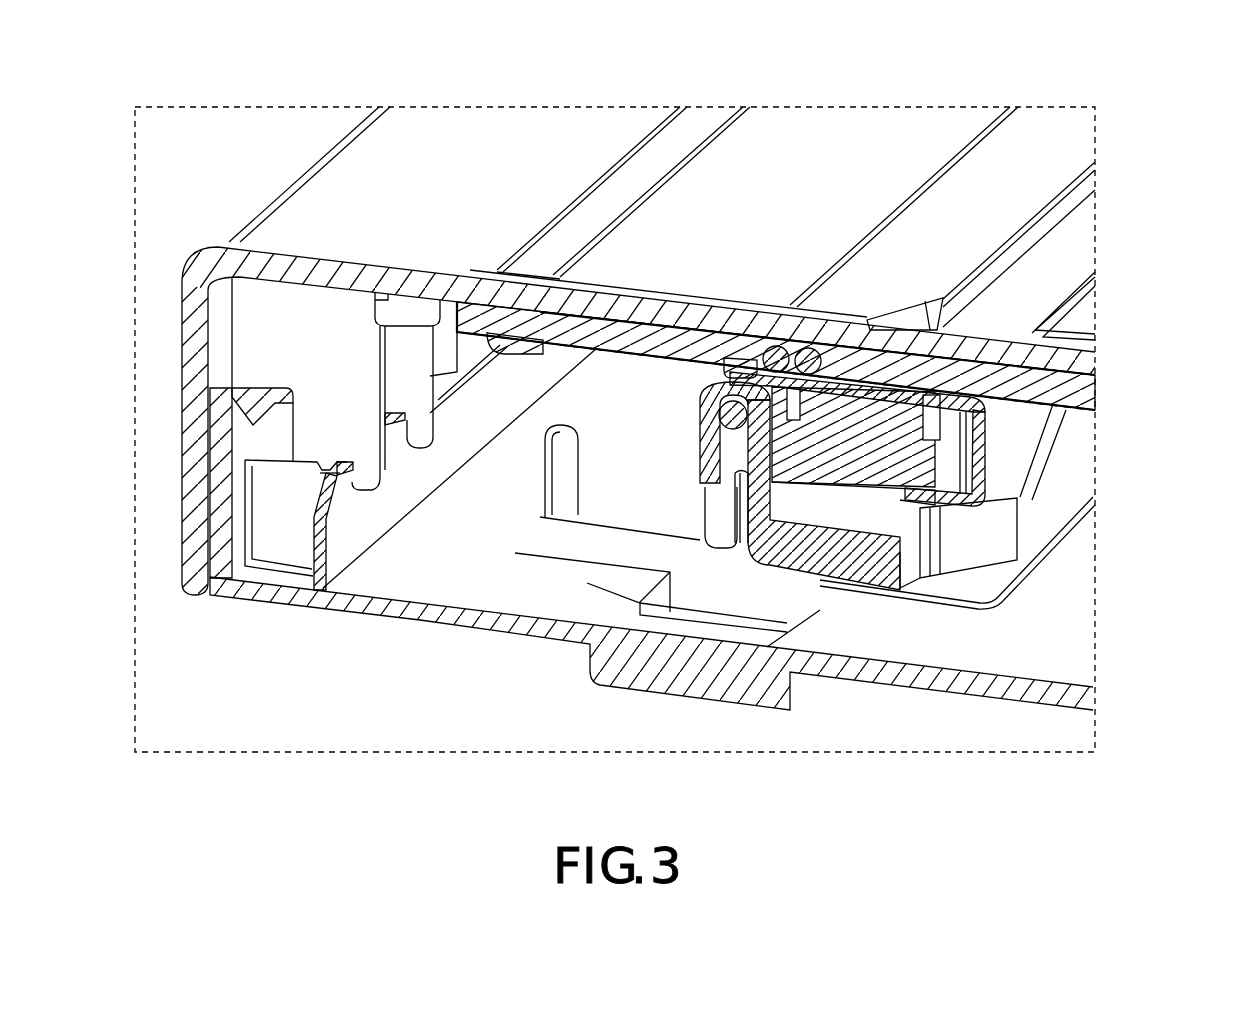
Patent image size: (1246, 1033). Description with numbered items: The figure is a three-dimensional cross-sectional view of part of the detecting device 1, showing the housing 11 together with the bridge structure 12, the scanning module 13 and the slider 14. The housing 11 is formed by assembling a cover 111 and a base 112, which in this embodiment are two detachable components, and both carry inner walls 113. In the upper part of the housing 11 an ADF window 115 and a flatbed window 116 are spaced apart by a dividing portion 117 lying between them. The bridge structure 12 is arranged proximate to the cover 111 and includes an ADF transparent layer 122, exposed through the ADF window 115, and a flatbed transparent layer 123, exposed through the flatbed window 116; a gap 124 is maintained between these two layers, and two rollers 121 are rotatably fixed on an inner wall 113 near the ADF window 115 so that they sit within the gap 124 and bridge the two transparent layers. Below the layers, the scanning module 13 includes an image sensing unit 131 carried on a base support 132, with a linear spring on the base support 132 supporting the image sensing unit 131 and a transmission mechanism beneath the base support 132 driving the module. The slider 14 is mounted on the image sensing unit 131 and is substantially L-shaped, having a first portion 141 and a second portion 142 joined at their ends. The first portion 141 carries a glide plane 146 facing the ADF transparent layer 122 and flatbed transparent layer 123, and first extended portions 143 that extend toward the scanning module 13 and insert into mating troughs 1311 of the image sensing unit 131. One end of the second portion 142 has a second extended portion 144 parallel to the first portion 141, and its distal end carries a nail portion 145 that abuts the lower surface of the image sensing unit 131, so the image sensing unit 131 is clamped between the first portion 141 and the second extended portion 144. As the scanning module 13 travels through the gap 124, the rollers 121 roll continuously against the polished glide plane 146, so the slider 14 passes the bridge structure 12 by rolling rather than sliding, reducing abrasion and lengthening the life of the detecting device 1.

The detecting device 1 is at (151, 85).
The housing 11 is at (190, 240).
The cover 111 is at (324, 262).
The base 112 is at (376, 606).
The inner walls 113 is at (290, 285).
The ADF window 115 is at (845, 133).
The flatbed window 116 is at (1078, 320).
The dividing portion 117 is at (1055, 133).
The bridge structure 12 is at (775, 243).
The roller 121 is at (730, 355).
The ADF transparent layer 122 is at (642, 330).
The flatbed transparent layer 123 is at (1080, 388).
The gap 124 is at (768, 345).
The scanning module 13 is at (985, 572).
The image sensing unit 131 is at (740, 463).
The trough 1311 is at (718, 418).
The base support 132 is at (800, 540).
The slider 14 is at (1000, 430).
The first portion 141 is at (878, 385).
The second portion 142 is at (985, 466).
The first extended portion 143 is at (716, 388).
The second extended portion 144 is at (945, 505).
The nail portion 145 is at (905, 497).
The glide plane 146 is at (1095, 360).